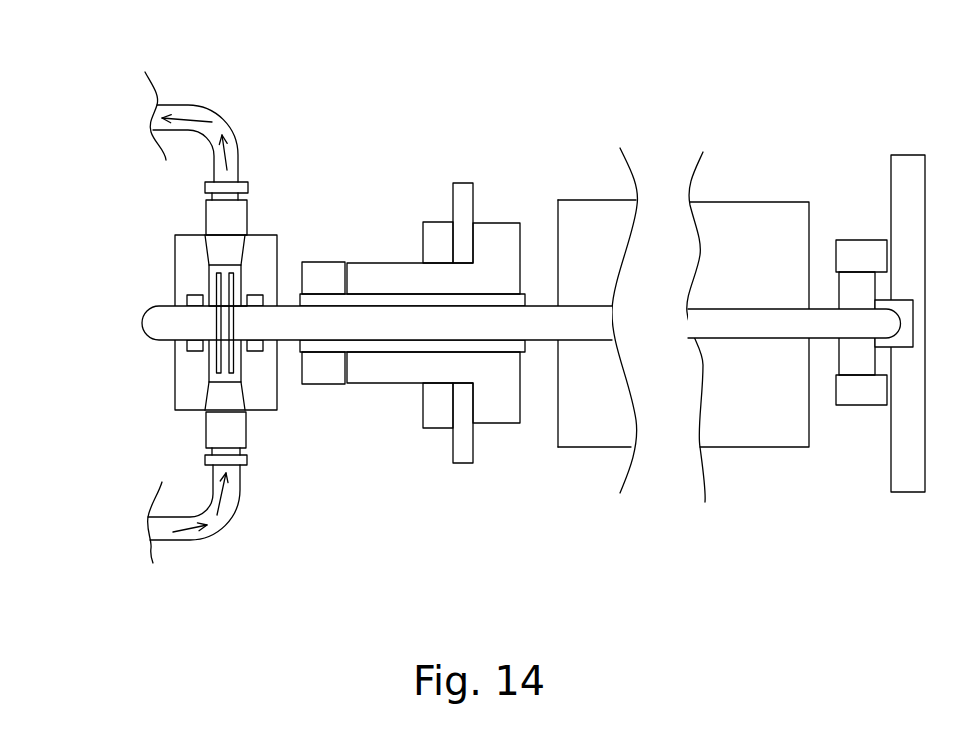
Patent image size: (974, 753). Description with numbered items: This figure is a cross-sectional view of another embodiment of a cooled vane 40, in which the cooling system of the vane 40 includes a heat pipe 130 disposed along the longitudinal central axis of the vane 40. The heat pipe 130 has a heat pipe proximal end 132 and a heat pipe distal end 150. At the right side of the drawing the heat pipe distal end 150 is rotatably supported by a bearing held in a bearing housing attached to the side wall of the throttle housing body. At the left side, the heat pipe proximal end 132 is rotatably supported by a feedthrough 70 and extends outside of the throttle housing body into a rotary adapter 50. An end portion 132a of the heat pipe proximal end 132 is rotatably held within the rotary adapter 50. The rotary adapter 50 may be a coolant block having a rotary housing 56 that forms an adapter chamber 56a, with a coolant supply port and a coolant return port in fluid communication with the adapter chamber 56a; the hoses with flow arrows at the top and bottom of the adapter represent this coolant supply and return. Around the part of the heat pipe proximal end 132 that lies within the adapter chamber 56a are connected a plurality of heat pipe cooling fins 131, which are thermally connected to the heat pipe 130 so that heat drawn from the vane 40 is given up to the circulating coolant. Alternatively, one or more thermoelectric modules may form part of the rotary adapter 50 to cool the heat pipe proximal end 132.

The vane 40 is at (768, 201).
The rotary adapter 50 is at (184, 317).
The rotary housing 56 is at (187, 380).
The adapter chamber 56a is at (217, 373).
The feedthrough 70 is at (497, 222).
The heat pipe 130 is at (718, 323).
The heat pipe cooling fins 131 is at (235, 283).
The heat pipe proximal end 132 is at (162, 325).
The end portion of heat pipe proximal end 132a is at (246, 322).
The heat pipe distal end 150 is at (858, 322).